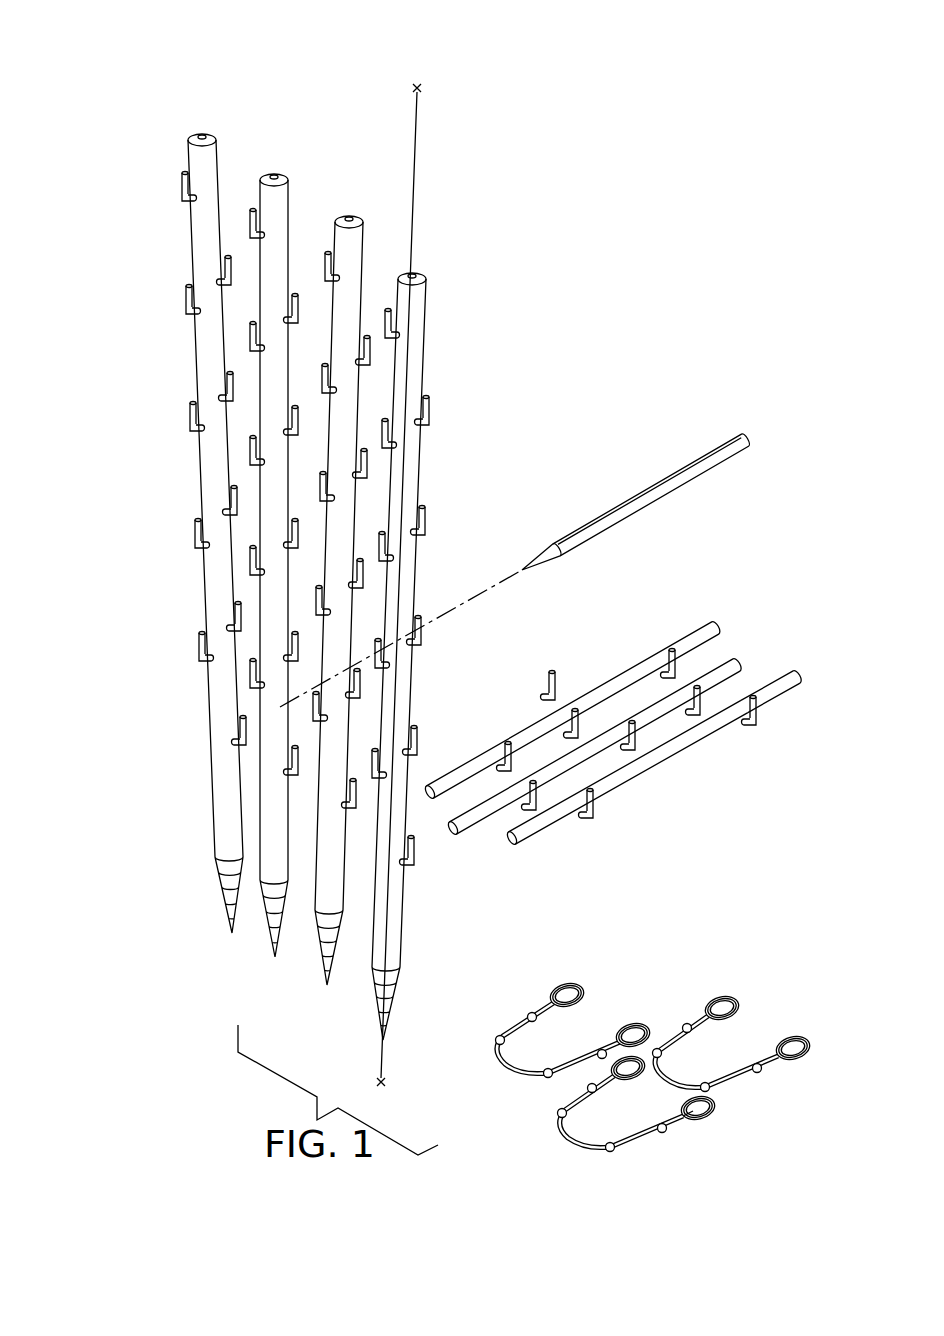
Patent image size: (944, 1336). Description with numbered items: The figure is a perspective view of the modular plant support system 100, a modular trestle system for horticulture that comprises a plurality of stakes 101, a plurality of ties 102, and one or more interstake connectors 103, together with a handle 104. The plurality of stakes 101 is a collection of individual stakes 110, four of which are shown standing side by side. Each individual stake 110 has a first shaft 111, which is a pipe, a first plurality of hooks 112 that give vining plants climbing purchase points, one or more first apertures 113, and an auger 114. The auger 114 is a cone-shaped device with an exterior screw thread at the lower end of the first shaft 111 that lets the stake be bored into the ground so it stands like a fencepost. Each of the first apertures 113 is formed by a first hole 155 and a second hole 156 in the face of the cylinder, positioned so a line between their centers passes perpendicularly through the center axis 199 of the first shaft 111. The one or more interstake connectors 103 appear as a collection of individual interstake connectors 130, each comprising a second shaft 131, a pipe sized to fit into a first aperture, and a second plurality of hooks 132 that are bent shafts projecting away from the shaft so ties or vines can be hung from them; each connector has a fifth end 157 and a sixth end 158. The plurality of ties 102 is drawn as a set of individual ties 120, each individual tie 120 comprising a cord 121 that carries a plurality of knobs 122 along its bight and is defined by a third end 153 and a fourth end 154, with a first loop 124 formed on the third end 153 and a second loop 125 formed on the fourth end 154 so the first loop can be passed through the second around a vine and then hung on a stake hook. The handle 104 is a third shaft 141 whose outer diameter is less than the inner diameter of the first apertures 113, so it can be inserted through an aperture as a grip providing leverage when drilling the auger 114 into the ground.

The modular plant support system 100 is at (104, 171).
The plurality of stakes 101 is at (190, 237).
The plurality of ties 102 is at (667, 1130).
The one or more interstake connectors 103 is at (672, 757).
The handle 104 is at (655, 480).
The individual stake 110 is at (275, 176).
The first shaft 111 is at (427, 310).
The first plurality of hooks 112 is at (427, 513).
The one or more first apertures 113 is at (428, 396).
The auger 114 is at (398, 1000).
The individual tie 120 is at (670, 1044).
The cord 121 is at (668, 1076).
The plurality of knobs 122 is at (528, 1015).
The first loop 124 is at (726, 1004).
The second loop 125 is at (794, 1038).
The individual interstake connector 130 is at (795, 672).
The second shaft 131 is at (777, 697).
The second plurality of hooks 132 is at (758, 716).
The third shaft 141 is at (652, 505).
The third end 153 is at (553, 992).
The fourth end 154 is at (712, 1117).
The first hole 155 is at (340, 372).
The second hole 156 is at (190, 314).
The fifth end 157 is at (511, 838).
The sixth end 158 is at (800, 672).
The center axis 199 is at (419, 135).